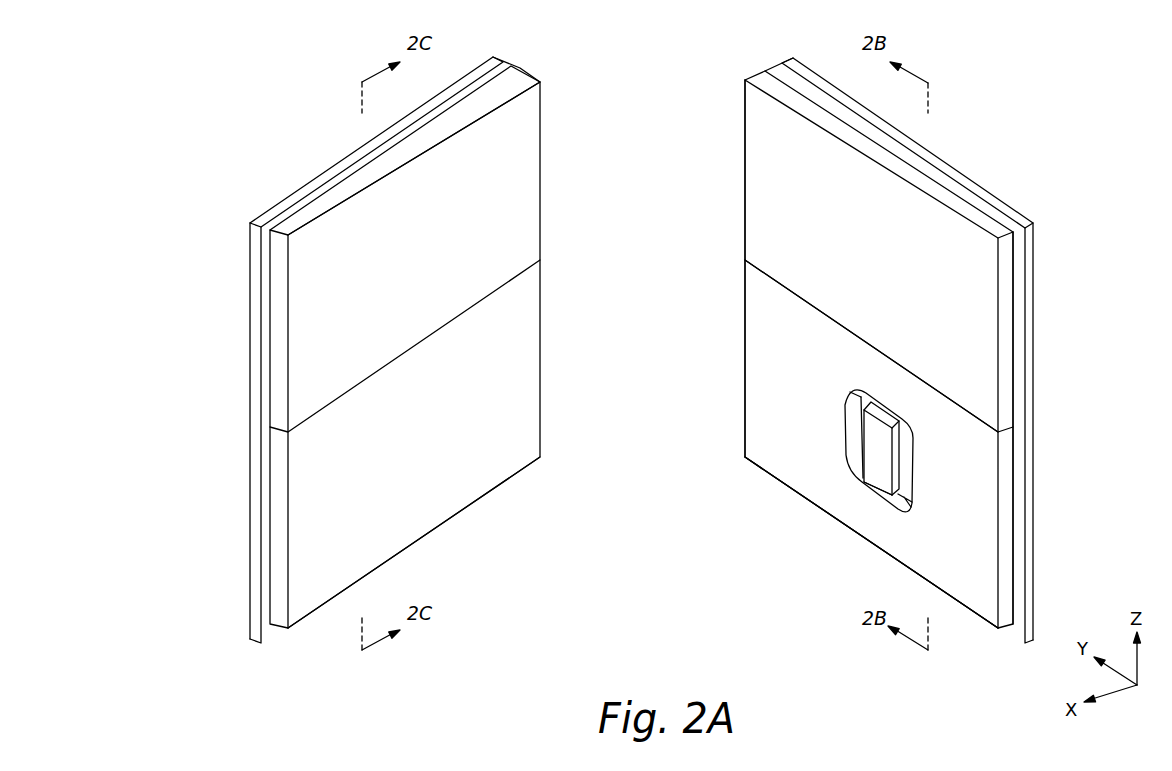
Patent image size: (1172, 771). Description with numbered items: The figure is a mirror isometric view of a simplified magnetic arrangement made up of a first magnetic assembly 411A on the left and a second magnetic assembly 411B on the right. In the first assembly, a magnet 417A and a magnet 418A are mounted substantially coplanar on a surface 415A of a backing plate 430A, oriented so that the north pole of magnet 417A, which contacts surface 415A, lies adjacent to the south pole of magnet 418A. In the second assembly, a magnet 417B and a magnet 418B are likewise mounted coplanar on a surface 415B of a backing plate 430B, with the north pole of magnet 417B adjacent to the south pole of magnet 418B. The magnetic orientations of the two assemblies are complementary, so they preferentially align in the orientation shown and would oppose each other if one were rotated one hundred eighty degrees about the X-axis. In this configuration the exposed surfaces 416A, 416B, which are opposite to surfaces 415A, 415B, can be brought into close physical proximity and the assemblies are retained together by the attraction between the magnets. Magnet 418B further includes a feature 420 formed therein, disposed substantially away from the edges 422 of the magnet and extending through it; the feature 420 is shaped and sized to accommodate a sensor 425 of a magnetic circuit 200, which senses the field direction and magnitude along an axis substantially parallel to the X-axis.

The first magnetic assembly 411A is at (391, 350).
The surface 415A is at (352, 350).
The exposed surface 416A is at (443, 347).
The magnet 417A is at (442, 254).
The magnet 418A is at (442, 449).
The backing plate 430A is at (250, 388).
The second magnetic assembly 411B is at (892, 350).
The surface 415B is at (943, 350).
The exposed surface 416B is at (838, 349).
The magnet 417B is at (898, 250).
The magnet 418B is at (823, 376).
The backing plate 430B is at (1037, 395).
The edges 422 is at (877, 348).
The feature 420 is at (850, 424).
The sensor 425 is at (880, 458).
The magnetic circuit 200 is at (862, 496).